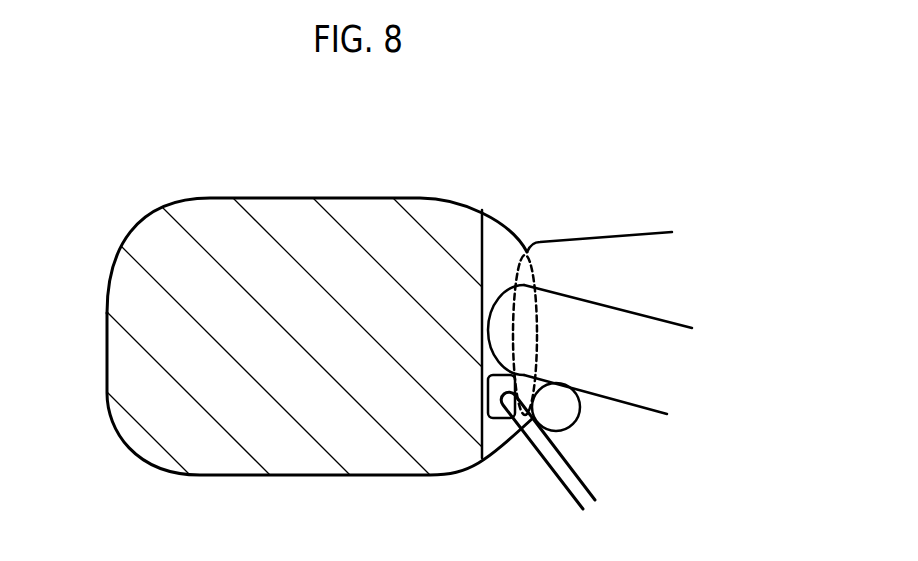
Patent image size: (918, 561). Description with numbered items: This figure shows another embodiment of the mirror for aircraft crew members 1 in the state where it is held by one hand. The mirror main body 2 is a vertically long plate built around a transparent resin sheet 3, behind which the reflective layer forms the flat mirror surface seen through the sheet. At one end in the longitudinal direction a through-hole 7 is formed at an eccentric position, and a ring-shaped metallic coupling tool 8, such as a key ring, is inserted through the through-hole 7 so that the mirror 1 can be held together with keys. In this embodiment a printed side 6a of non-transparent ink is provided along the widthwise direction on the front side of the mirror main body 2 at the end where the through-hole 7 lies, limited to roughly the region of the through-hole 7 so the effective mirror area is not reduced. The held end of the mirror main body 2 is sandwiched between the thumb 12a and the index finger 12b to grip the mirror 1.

The mirror for aircraft crew members 1 is at (590, 282).
The mirror main body 2 is at (357, 207).
The transparent resin sheet 3 is at (218, 210).
The printed side 6a is at (493, 240).
The through-hole 7 is at (488, 377).
The coupling tool 8 is at (552, 465).
The thumb 12a is at (555, 310).
The index finger 12b is at (563, 420).